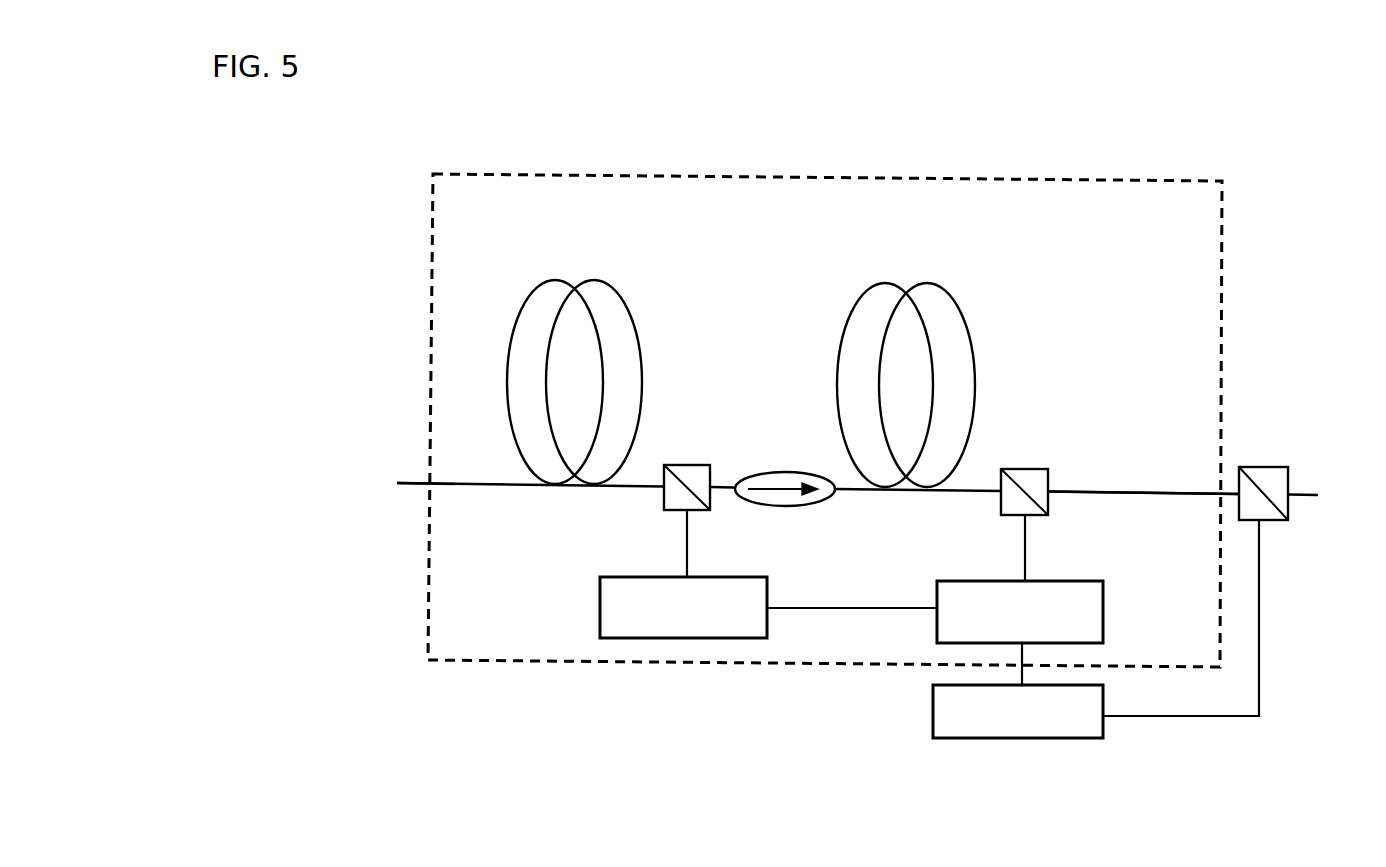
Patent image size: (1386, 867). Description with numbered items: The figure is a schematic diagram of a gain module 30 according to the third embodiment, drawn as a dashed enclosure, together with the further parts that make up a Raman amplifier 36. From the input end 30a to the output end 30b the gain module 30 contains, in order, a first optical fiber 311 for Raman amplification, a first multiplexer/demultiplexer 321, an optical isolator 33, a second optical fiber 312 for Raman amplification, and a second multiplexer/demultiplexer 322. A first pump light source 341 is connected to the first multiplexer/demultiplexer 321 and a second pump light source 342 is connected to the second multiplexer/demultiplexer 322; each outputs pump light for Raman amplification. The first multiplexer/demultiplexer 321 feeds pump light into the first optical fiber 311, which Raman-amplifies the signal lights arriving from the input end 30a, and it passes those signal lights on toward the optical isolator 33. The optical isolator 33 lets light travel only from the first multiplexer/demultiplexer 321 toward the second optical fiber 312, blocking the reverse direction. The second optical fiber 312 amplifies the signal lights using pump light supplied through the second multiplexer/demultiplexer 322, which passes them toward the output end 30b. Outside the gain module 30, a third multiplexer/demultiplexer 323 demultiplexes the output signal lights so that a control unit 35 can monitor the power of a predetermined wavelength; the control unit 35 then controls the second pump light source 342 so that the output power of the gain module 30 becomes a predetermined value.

The gain module 30 is at (433, 193).
The Raman amplifier 36 is at (410, 318).
The input end 30a is at (457, 486).
The output end 30b is at (1077, 495).
The first optical fiber for Raman amplification 311 is at (541, 284).
The second optical fiber for Raman amplification 312 is at (872, 289).
The first multiplexer/demultiplexer 321 is at (692, 465).
The second multiplexer/demultiplexer 322 is at (1040, 469).
The third multiplexer/demultiplexer 323 is at (1259, 467).
The optical isolator 33 is at (781, 471).
The first pump light source 341 is at (600, 614).
The second pump light source 342 is at (1103, 622).
The control unit 35 is at (1105, 728).